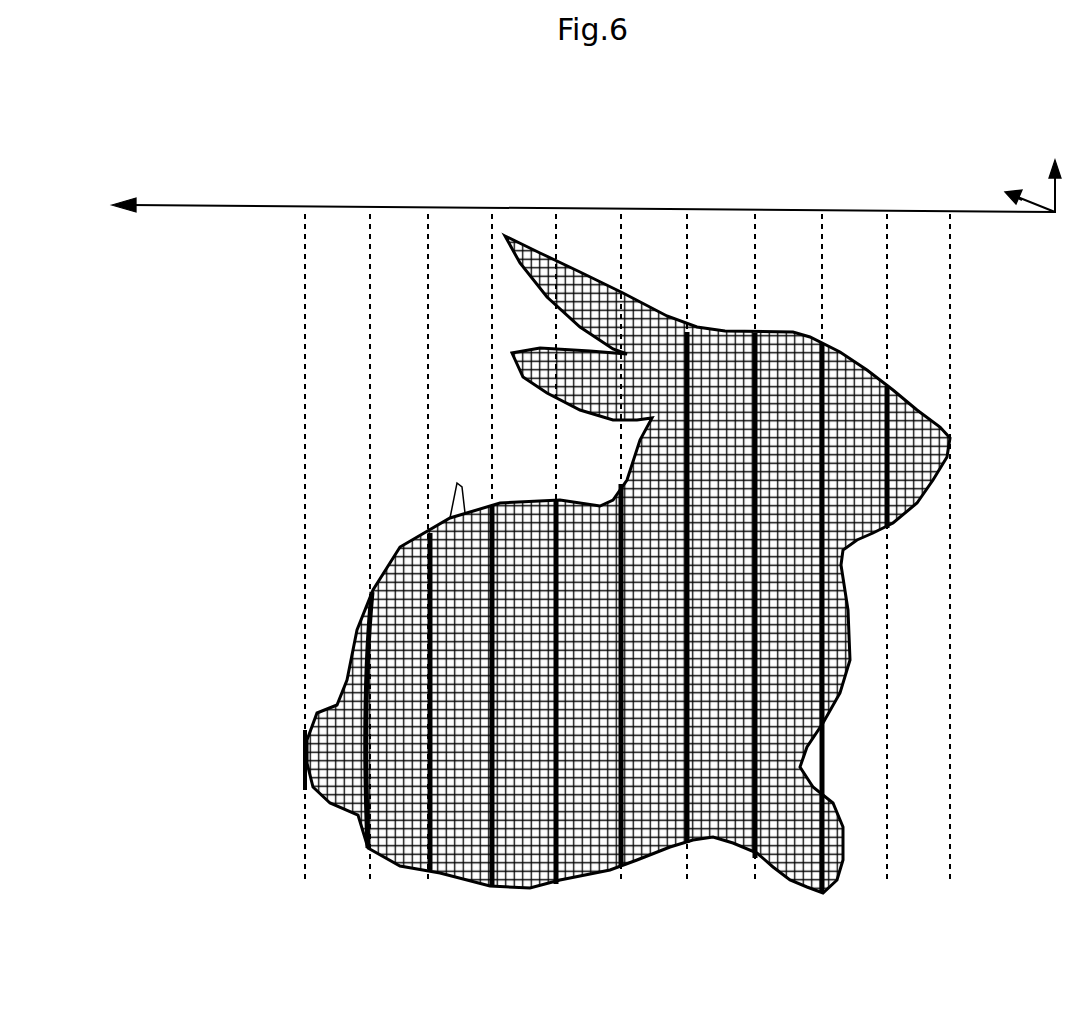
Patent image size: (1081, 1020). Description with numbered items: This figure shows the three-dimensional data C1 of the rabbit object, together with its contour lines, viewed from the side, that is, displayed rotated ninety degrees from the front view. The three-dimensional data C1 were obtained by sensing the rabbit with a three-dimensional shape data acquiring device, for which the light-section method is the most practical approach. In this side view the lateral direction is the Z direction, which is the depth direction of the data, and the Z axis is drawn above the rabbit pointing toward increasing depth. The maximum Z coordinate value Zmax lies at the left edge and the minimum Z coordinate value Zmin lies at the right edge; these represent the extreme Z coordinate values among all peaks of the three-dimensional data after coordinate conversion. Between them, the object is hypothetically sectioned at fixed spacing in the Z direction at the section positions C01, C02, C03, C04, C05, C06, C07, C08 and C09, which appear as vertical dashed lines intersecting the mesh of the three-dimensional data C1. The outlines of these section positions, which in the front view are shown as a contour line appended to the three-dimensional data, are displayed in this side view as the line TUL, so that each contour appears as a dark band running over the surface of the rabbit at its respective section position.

The Z direction Z is at (561, 195).
The maximum Z coordinate value Zmax is at (297, 526).
The minimum Z coordinate value Zmin is at (946, 527).
The section position C01 is at (886, 524).
The section position C02 is at (816, 535).
The section position C03 is at (763, 523).
The section position C04 is at (693, 530).
The section position C05 is at (623, 523).
The section position C06 is at (571, 529).
The section position C07 is at (501, 522).
The section position C08 is at (431, 529).
The section position C09 is at (358, 521).
The three-dimensional data C1 is at (799, 333).
The line TUL is at (457, 481).